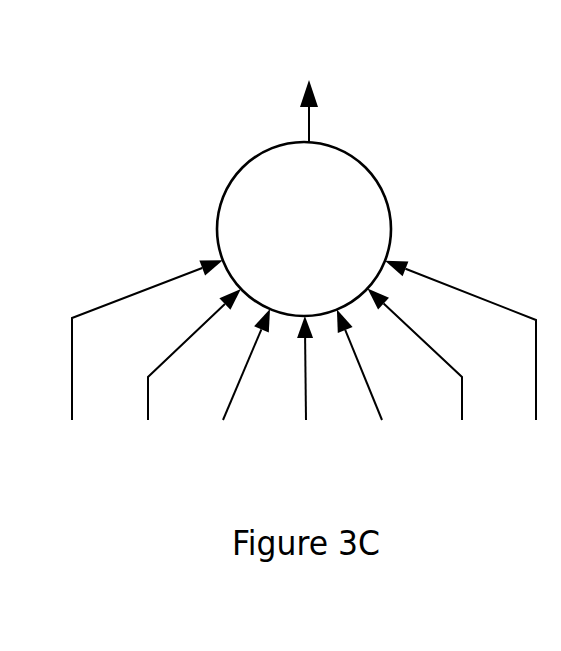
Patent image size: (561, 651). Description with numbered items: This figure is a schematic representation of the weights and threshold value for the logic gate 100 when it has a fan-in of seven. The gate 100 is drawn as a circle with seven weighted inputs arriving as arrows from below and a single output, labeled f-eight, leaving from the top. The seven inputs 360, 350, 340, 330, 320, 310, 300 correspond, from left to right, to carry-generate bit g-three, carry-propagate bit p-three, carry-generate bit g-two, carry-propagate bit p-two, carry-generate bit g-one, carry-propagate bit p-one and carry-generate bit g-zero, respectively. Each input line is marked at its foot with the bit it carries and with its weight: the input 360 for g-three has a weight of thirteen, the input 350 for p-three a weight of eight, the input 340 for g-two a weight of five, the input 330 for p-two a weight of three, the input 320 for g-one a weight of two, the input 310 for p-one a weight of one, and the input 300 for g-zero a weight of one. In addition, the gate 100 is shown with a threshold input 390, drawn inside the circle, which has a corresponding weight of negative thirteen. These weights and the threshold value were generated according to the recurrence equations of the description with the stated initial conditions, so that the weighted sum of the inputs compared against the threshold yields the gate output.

The logic gate 100 is at (386, 150).
The threshold input 390 is at (336, 207).
The input 300 is at (536, 332).
The input 310 is at (448, 357).
The input 320 is at (370, 386).
The input 330 is at (306, 386).
The input 340 is at (237, 383).
The input 350 is at (200, 327).
The input 360 is at (73, 338).